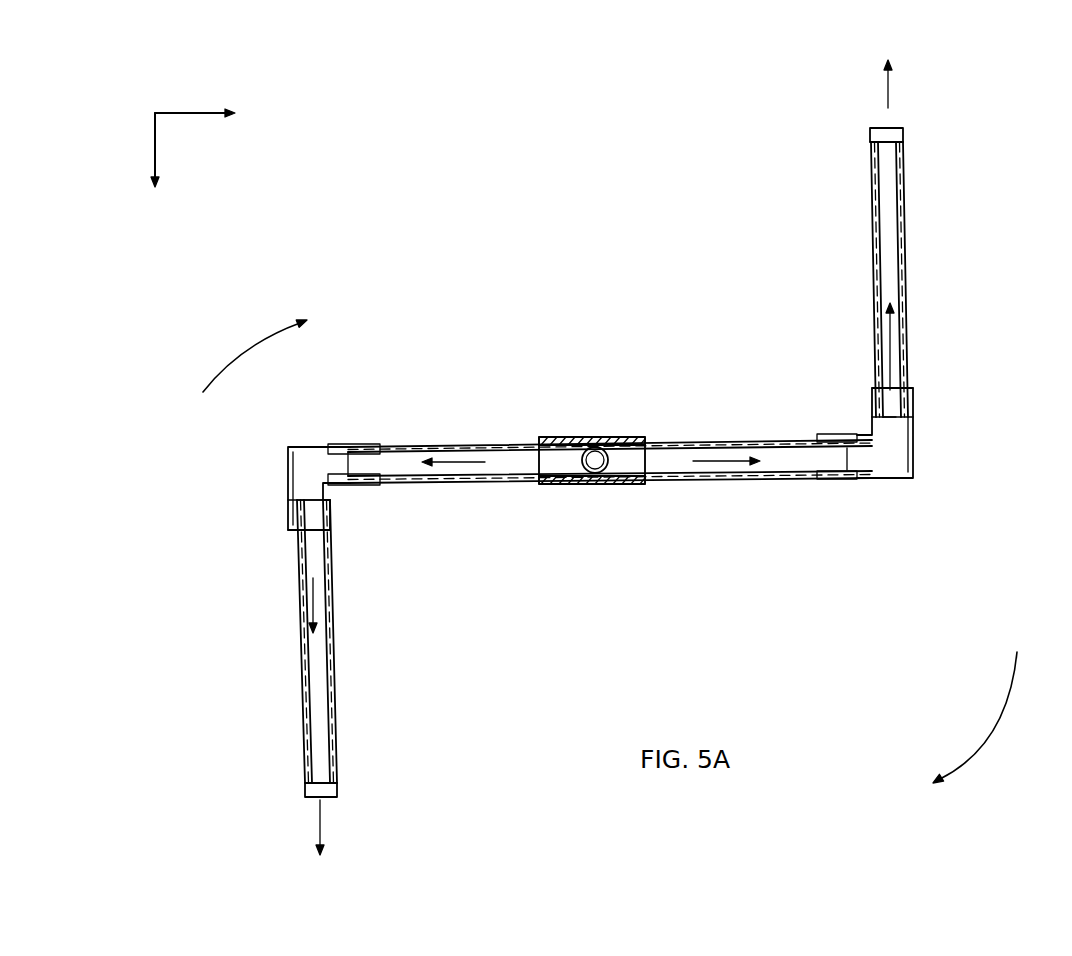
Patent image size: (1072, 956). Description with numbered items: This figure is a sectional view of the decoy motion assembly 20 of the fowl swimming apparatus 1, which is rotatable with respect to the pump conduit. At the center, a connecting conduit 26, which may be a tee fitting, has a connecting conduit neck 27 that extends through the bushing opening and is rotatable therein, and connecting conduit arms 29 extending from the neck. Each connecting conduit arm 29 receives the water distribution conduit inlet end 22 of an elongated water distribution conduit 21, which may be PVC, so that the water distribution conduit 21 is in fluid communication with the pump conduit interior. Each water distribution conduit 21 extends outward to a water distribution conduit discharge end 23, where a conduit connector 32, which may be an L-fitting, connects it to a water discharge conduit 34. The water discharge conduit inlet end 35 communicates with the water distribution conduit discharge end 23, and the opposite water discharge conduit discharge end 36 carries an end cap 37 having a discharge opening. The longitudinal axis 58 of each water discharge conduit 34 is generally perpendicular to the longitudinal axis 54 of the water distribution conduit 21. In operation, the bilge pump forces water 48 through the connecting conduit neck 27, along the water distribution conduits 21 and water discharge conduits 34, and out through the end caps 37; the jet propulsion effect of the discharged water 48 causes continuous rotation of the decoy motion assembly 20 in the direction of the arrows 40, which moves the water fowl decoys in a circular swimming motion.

The fowl swimming apparatus 1 is at (443, 296).
The decoy motion assembly 20 is at (715, 403).
The water distribution conduit 21 is at (472, 490).
The water distribution conduit inlet end 22 is at (600, 483).
The water distribution conduit discharge end 23 is at (345, 445).
The connecting conduit 26 is at (610, 425).
The connecting conduit neck 27 is at (585, 480).
The connecting conduit arm 29 is at (545, 437).
The conduit connector 32 is at (288, 477).
The water discharge conduit 34 is at (292, 614).
The water discharge conduit inlet end 35 is at (303, 492).
The water discharge conduit discharge end 36 is at (307, 798).
The end cap 37 is at (337, 787).
The arrows 40 is at (247, 340).
The water 48 is at (455, 445).
The longitudinal axis of water distribution conduit 54 is at (193, 113).
The longitudinal axis of water discharge conduit 58 is at (155, 137).